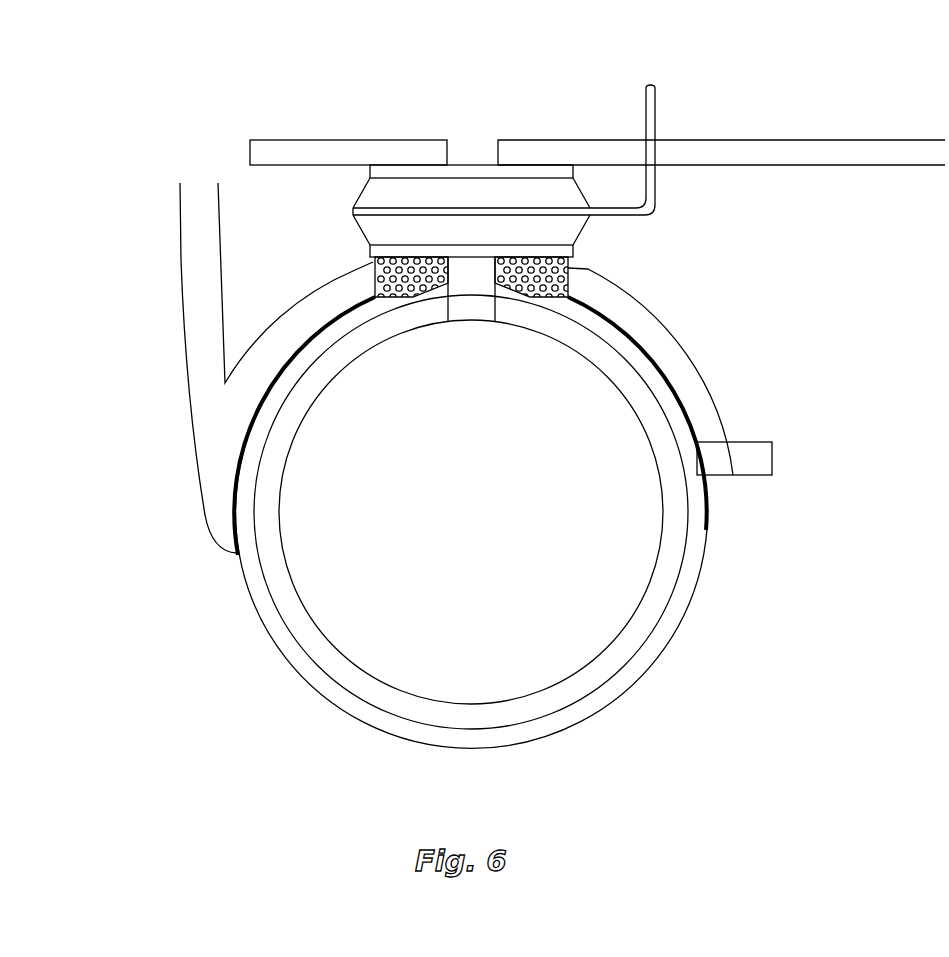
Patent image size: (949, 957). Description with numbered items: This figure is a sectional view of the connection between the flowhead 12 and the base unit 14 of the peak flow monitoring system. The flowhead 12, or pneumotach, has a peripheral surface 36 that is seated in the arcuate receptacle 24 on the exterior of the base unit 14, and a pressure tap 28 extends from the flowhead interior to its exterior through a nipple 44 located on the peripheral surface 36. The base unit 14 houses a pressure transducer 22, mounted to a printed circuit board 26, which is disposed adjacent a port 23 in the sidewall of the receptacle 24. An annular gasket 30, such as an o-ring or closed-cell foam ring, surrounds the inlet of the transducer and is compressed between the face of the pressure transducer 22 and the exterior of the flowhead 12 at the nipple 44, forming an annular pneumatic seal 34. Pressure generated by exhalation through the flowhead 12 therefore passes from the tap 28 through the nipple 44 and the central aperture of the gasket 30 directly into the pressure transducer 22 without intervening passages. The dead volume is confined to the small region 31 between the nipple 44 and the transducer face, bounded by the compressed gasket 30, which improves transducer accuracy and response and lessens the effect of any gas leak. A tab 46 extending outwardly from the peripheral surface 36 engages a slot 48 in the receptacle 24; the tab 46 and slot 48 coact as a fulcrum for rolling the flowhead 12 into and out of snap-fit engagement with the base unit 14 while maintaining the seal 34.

The flowhead 12 is at (523, 548).
The base unit 14 is at (202, 275).
The pressure transducer 22 is at (583, 230).
The port 23 is at (350, 255).
The arcuate receptacle 24 is at (718, 478).
The printed circuit board 26 is at (293, 152).
The pressure tap 28 is at (468, 310).
The annular gasket 30 is at (385, 260).
The region 31 is at (452, 262).
The pneumatic seal 34 is at (515, 258).
The peripheral surface 36 is at (258, 617).
The nipple 44 is at (475, 237).
The tab 46 is at (758, 457).
The slot 48 is at (748, 438).